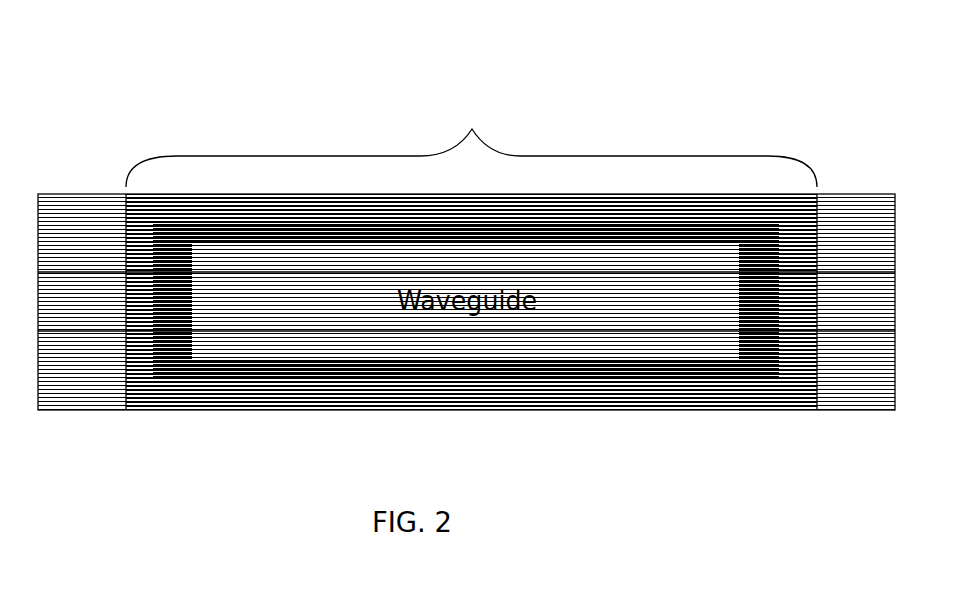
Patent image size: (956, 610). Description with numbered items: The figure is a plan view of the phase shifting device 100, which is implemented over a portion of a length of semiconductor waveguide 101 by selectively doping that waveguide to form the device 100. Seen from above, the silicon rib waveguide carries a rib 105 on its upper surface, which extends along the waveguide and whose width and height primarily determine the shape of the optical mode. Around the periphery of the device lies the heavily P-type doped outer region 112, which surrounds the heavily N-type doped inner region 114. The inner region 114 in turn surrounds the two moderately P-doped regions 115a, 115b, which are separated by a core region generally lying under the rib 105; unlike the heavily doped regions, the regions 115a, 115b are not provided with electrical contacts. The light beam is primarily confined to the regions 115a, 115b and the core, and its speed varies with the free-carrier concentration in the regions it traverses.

The phase shifting device 100 is at (471, 137).
The semiconductor waveguide 101 is at (87, 220).
The rib 105 is at (265, 302).
The outer region 112 is at (583, 205).
The inner region 114 is at (631, 236).
The doped region 115a is at (720, 253).
The doped region 115b is at (701, 342).